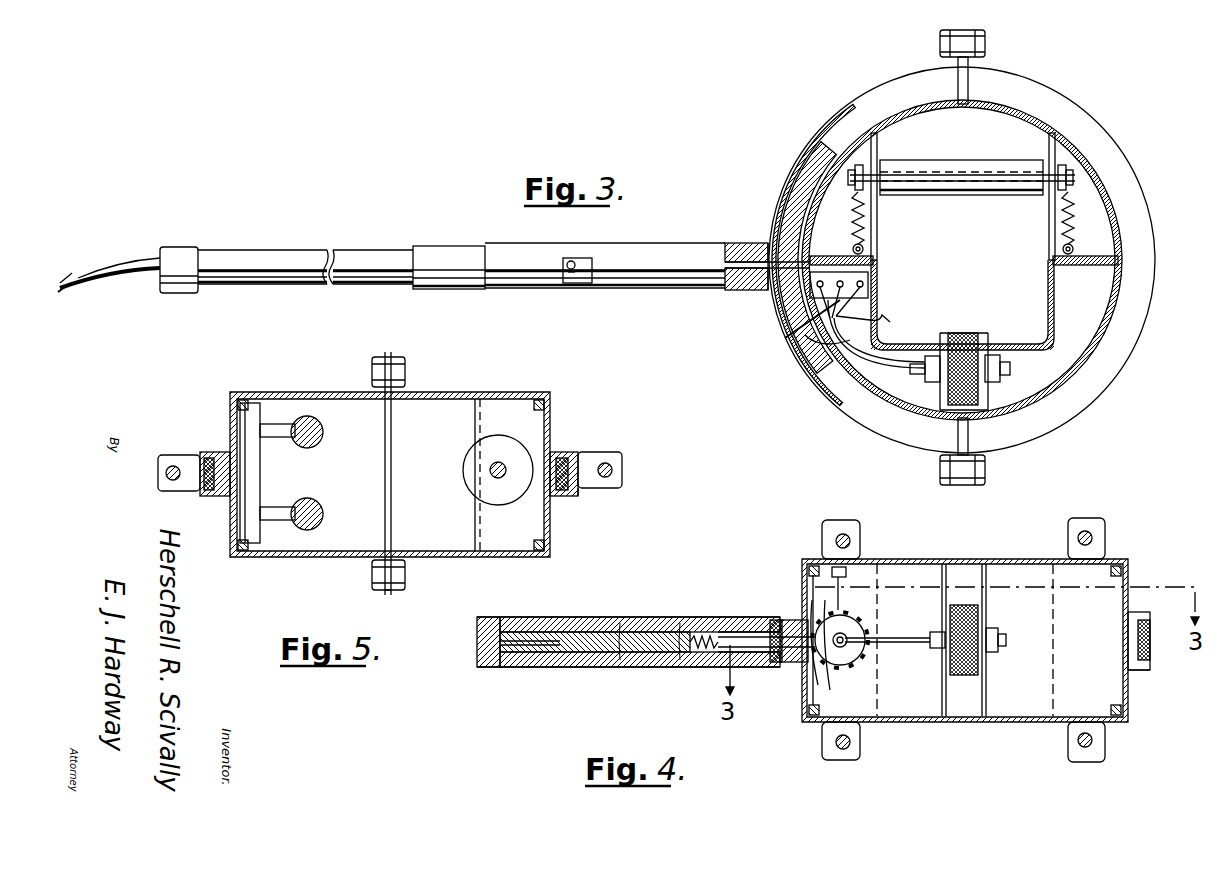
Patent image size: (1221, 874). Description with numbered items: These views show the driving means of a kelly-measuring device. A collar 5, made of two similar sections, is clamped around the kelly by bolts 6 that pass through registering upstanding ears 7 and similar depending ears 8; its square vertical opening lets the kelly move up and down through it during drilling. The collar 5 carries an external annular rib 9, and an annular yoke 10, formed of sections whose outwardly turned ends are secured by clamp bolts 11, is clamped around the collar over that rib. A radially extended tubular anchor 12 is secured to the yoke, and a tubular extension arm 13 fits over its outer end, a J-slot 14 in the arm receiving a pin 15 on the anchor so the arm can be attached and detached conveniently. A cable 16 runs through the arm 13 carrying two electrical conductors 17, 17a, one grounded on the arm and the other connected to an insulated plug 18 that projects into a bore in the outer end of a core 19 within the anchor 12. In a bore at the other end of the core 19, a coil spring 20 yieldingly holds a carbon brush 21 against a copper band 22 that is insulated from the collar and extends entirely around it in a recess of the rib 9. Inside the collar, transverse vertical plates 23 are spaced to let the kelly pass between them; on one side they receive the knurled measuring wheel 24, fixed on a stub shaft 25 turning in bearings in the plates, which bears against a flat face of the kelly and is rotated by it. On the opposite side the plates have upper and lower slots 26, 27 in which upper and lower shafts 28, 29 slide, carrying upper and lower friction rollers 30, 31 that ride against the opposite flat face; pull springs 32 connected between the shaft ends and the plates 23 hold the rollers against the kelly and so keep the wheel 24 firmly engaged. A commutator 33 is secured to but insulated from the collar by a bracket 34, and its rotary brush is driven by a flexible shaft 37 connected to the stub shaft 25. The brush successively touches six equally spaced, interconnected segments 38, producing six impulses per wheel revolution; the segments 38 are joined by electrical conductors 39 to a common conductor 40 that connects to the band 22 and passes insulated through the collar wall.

In FIG. 3, the collar 5 is at (862, 390).
In FIG. 5, the collar 5 is at (550, 400).
In FIG. 4, the collar 5 is at (1052, 540).
In FIG. 5, the bolts 6 is at (405, 372).
In FIG. 4, the bolts 6 is at (843, 534).
In FIG. 5, the upstanding ears 7 is at (395, 345).
In FIG. 4, the upstanding ears 7 is at (855, 528).
In FIG. 5, the depending ears 8 is at (395, 595).
In FIG. 4, the depending ears 8 is at (860, 758).
In FIG. 3, the external annular rib 9 is at (822, 150).
In FIG. 5, the external annular rib 9 is at (562, 452).
In FIG. 3, the annular yoke 10 is at (1035, 67).
In FIG. 5, the annular yoke 10 is at (578, 500).
In FIG. 4, the annular yoke 10 is at (1140, 672).
In FIG. 3, the clamp bolts 11 is at (940, 42).
In FIG. 5, the clamp bolts 11 is at (173, 480).
In FIG. 3, the tubular anchor 12 is at (700, 248).
In FIG. 4, the tubular anchor 12 is at (733, 617).
In FIG. 3, the tubular extension arm 13 is at (490, 248).
In FIG. 4, the tubular extension arm 13 is at (552, 617).
In FIG. 3, the J-slot 14 is at (575, 283).
In FIG. 3, the pin 15 is at (571, 258).
In FIG. 3, the cable 16 is at (148, 263).
In FIG. 3, the electrical conductor 17 is at (58, 288).
In FIG. 3, the electrical conductor 17a is at (62, 295).
In FIG. 4, the insulated plug 18 is at (490, 667).
In FIG. 4, the core 19 is at (645, 632).
In FIG. 4, the coil spring 20 is at (705, 652).
In FIG. 3, the carbon brush 21 is at (748, 290).
In FIG. 4, the carbon brush 21 is at (765, 667).
In FIG. 3, the copper band 22 is at (805, 340).
In FIG. 5, the copper band 22 is at (580, 452).
In FIG. 4, the copper band 22 is at (1150, 618).
In FIG. 3, the transverse vertical plates 23 is at (880, 262).
In FIG. 5, the transverse vertical plates 23 is at (445, 405).
In FIG. 4, the transverse vertical plates 23 is at (950, 575).
In FIG. 3, the measuring wheel 24 is at (968, 405).
In FIG. 5, the measuring wheel 24 is at (507, 438).
In FIG. 4, the measuring wheel 24 is at (965, 675).
In FIG. 3, the stub shaft 25 is at (1012, 370).
In FIG. 5, the stub shaft 25 is at (498, 478).
In FIG. 4, the stub shaft 25 is at (1005, 625).
In FIG. 3, the upper slot 26 is at (877, 148).
In FIG. 5, the upper slot 26 is at (268, 410).
In FIG. 5, the lower slot 27 is at (280, 530).
In FIG. 3, the upper shaft 28 is at (850, 177).
In FIG. 5, the upper shaft 28 is at (312, 412).
In FIG. 5, the lower shaft 29 is at (302, 528).
In FIG. 3, the upper friction roller 30 is at (978, 160).
In FIG. 5, the upper friction roller 30 is at (323, 432).
In FIG. 5, the lower friction roller 31 is at (323, 514).
In FIG. 3, the pull springs 32 is at (855, 212).
In FIG. 4, the commutator 33 is at (845, 665).
In FIG. 4, the bracket 34 is at (852, 583).
In FIG. 3, the flexible shaft 37 is at (850, 360).
In FIG. 4, the flexible shaft 37 is at (900, 638).
In FIG. 3, the segments 38 is at (860, 312).
In FIG. 3, the electrical conductors 39 is at (790, 333).
In FIG. 4, the electrical conductors 39 is at (815, 690).
In FIG. 3, the common conductor 40 is at (874, 330).